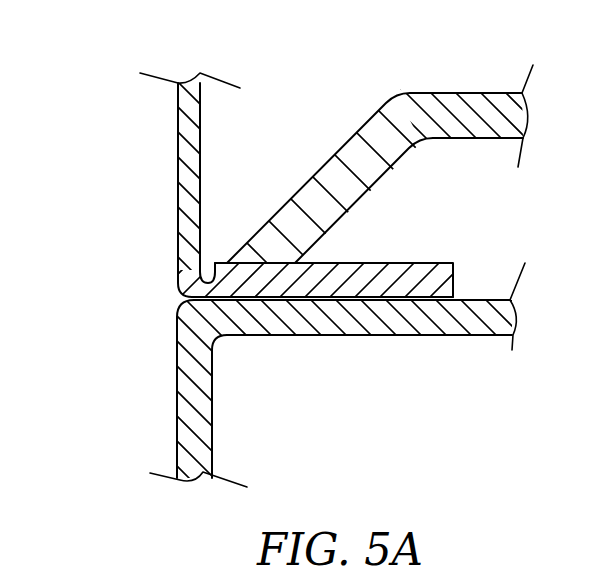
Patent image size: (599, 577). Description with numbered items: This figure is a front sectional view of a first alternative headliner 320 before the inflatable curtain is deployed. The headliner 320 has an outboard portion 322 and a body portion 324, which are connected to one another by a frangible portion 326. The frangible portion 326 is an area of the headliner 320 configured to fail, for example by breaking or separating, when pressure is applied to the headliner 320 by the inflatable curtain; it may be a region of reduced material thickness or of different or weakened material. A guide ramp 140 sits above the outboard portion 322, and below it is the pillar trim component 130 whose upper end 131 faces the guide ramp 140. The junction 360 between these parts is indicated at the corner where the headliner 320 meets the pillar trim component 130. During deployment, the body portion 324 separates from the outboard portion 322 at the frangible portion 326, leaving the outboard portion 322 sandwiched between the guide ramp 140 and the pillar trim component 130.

The headliner 320 is at (158, 133).
The body portion 324 is at (178, 176).
The outboard portion 322 is at (413, 273).
The frangible portion 326 is at (190, 285).
The interface / joint 360 is at (106, 279).
The upper end 131 is at (178, 307).
The pillar trim component 130 is at (158, 393).
The guide ramp 140 is at (445, 82).